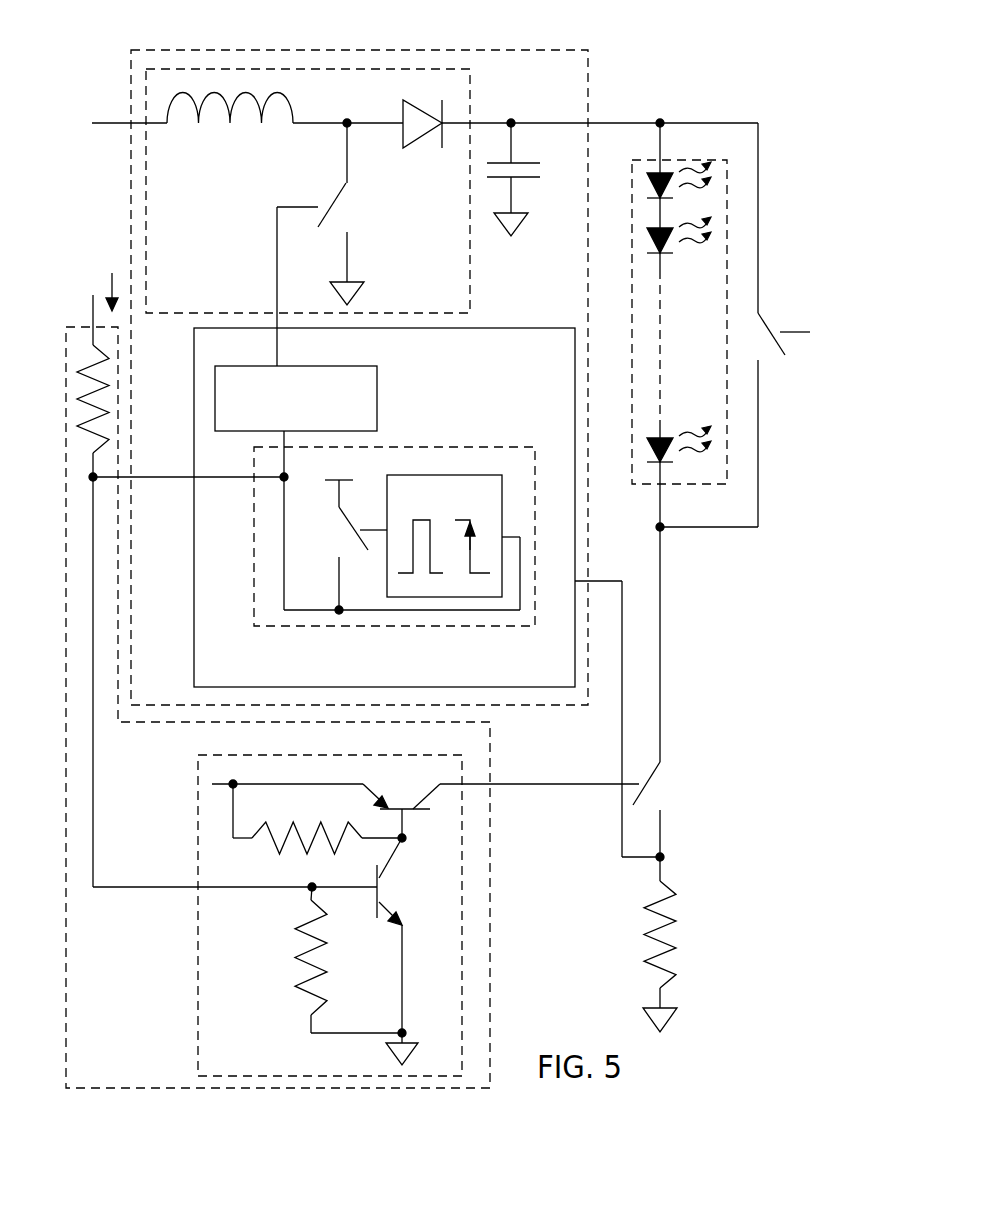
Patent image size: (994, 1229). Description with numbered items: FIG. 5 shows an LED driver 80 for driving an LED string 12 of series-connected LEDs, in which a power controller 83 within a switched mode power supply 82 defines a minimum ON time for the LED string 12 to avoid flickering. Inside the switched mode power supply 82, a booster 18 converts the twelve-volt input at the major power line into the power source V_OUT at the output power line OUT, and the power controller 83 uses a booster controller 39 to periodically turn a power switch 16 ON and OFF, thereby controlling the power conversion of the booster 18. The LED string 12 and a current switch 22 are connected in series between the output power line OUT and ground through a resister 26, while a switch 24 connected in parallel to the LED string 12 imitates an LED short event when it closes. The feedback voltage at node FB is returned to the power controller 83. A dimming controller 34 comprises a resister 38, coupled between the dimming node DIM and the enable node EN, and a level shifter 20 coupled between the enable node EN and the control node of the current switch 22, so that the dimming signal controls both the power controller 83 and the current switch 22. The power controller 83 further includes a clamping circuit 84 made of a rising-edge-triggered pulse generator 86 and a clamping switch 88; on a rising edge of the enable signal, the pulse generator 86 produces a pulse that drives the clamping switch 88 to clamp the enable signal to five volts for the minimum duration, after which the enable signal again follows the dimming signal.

The LED driver 80 is at (613, 70).
The switched mode power supply 82 is at (533, 50).
The booster 18 is at (420, 69).
The power switch 16 is at (350, 204).
The power controller 83 is at (556, 363).
The booster controller 39 is at (307, 418).
The clamping circuit 84 is at (398, 447).
The clamping switch 88 is at (333, 535).
The rising-edge-triggered pulse generator 86 is at (453, 507).
The LED string 12 is at (682, 158).
The switch 24 is at (770, 313).
The current switch 22 is at (667, 788).
The resister 26 is at (673, 913).
The dimming controller 34 is at (121, 1001).
The resister 38 is at (107, 380).
The level shifter 20 is at (448, 986).